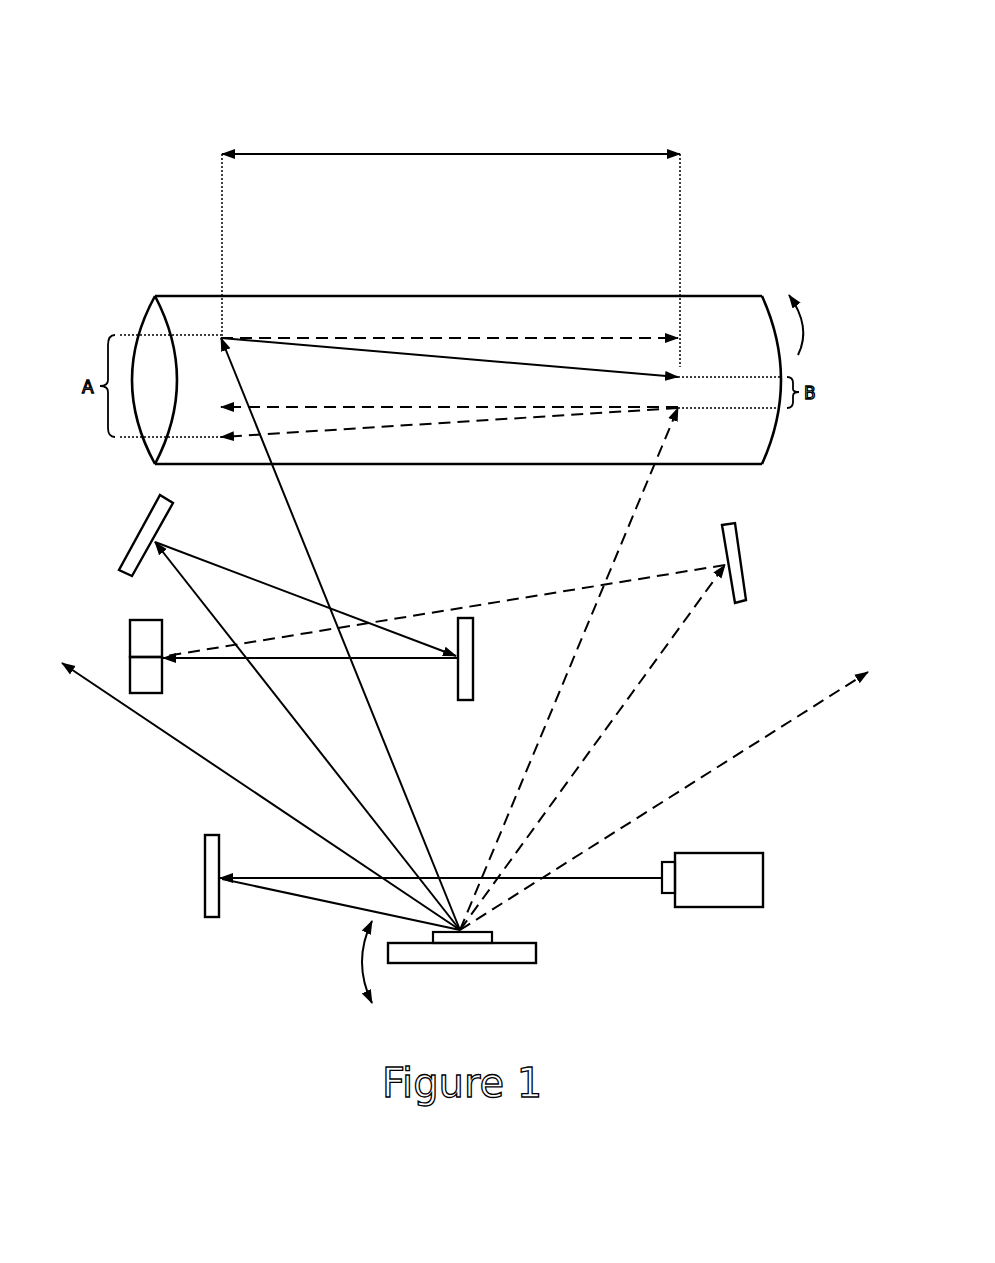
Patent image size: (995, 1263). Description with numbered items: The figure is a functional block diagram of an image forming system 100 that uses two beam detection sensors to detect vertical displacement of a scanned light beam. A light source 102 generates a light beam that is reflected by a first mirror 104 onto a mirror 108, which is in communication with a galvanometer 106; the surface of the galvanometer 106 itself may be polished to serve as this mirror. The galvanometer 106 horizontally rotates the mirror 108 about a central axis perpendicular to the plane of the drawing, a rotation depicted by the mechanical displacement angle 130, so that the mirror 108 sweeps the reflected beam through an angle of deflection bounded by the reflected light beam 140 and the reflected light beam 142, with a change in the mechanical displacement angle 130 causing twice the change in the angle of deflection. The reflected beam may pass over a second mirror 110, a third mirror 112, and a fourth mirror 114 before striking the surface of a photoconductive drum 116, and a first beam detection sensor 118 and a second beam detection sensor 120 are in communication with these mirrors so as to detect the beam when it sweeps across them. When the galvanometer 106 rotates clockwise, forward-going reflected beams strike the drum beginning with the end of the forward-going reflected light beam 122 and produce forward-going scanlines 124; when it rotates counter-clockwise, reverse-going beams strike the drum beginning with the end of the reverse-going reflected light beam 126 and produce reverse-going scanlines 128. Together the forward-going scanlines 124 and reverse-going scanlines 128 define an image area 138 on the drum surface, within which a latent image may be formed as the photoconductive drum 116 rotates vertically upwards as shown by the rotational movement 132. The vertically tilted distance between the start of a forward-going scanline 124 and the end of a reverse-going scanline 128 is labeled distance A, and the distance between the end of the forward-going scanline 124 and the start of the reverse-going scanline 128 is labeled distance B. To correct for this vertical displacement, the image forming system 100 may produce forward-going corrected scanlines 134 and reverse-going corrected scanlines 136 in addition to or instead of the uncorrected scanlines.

The image forming system 100 is at (212, 66).
The light source 102 is at (675, 853).
The first mirror 104 is at (217, 918).
The galvanometer 106 is at (530, 964).
The mirror 108 is at (493, 937).
The second mirror 110 is at (172, 500).
The third mirror 112 is at (474, 660).
The fourth mirror 114 is at (745, 601).
The photoconductive drum 116 is at (694, 296).
The first beam detection sensor 118 is at (130, 628).
The second beam detection sensor 120 is at (163, 688).
The forward-going reflected light beam 122 is at (301, 528).
The forward-going scanlines 124 is at (284, 346).
The reverse-going reflected light beam 126 is at (626, 533).
The reverse-going scanlines 128 is at (598, 414).
The mechanical displacement angle 130 is at (360, 960).
The rotational movement 132 is at (797, 312).
The forward-going corrected scanlines 134 is at (306, 336).
The reverse-going corrected scanlines 136 is at (576, 405).
The image area 138 is at (258, 154).
The reflected light beam 140 is at (148, 724).
The reflected light beam 142 is at (786, 722).